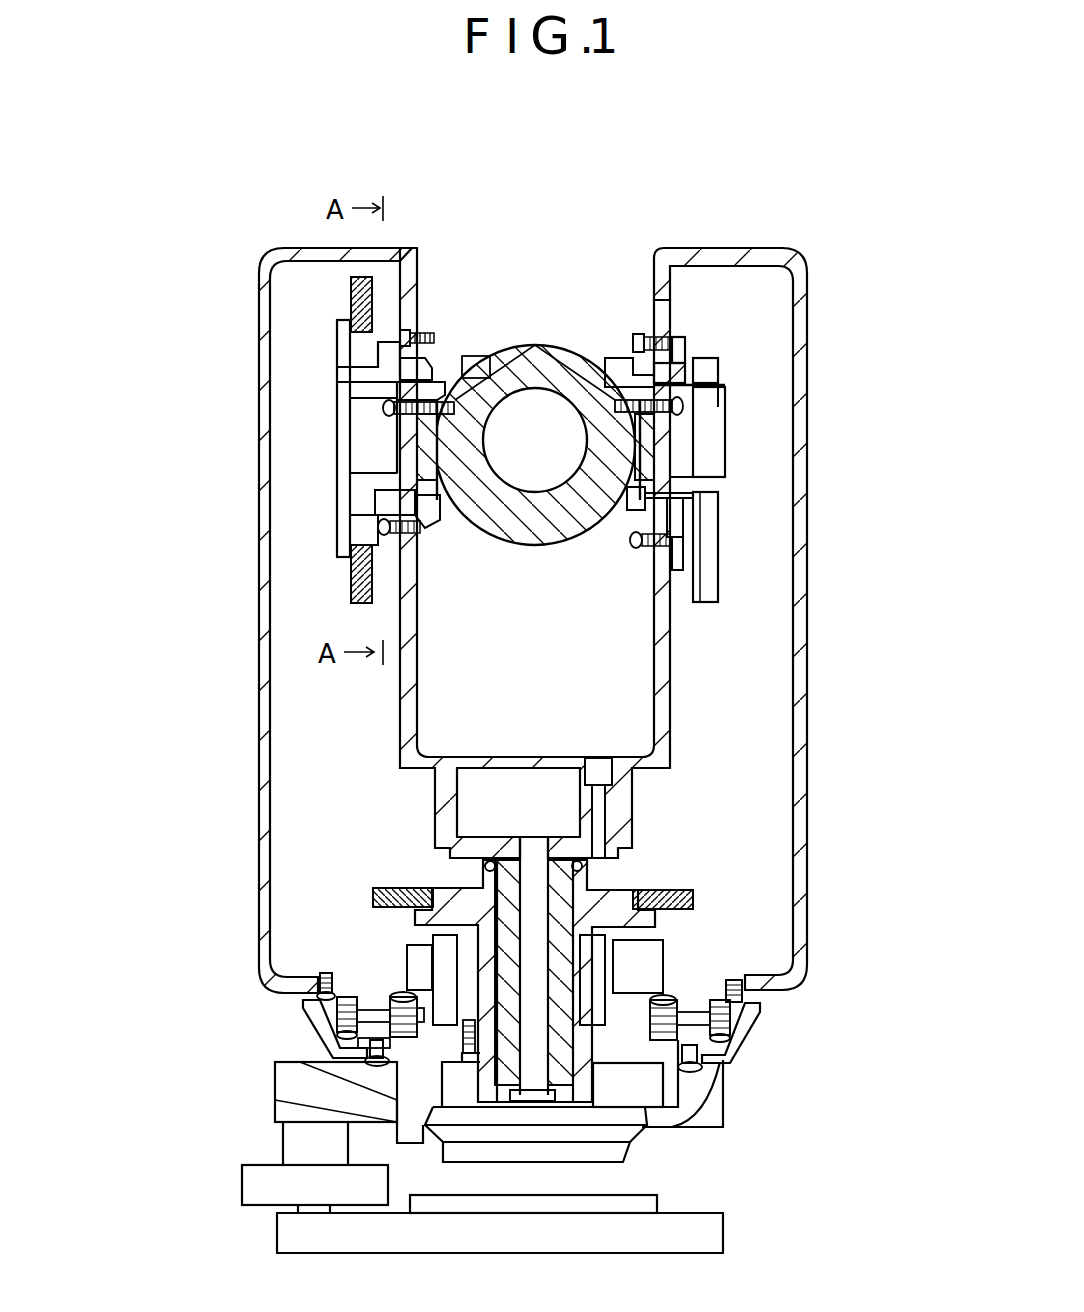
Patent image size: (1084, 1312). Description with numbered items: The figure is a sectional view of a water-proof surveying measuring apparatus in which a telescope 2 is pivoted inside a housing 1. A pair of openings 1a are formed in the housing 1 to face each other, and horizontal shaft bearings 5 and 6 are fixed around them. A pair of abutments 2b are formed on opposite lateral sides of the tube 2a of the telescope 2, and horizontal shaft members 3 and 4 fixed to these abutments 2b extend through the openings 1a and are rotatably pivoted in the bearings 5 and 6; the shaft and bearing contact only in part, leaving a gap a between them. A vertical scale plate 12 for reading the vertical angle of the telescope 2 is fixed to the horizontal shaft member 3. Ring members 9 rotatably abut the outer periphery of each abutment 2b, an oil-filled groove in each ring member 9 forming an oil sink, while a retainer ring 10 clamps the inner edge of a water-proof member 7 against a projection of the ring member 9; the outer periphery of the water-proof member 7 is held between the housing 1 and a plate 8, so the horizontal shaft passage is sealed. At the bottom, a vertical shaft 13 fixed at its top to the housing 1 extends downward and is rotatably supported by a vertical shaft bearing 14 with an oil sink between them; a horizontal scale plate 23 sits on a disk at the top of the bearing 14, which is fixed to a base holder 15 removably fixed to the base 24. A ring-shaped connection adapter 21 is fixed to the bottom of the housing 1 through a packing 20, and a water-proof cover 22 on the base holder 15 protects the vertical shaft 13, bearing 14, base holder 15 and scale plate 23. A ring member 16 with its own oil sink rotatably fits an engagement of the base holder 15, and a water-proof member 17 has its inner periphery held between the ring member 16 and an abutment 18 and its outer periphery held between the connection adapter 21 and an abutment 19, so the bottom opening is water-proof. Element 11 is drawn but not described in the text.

The housing 1 is at (667, 665).
The openings 1a is at (700, 510).
The telescope 2 is at (540, 500).
The tube 2a is at (565, 365).
The abutments 2b is at (482, 362).
The horizontal shaft member 3 is at (343, 375).
The gap a is at (340, 420).
The horizontal shaft member 4 is at (702, 420).
The horizontal shaft bearing 5 is at (385, 342).
The horizontal shaft bearing 6 is at (680, 350).
The water-proof member 7 is at (422, 375).
The plate 8 is at (423, 335).
The ring members 9 is at (440, 385).
The retainer ring 10 is at (425, 530).
The lower clamp 11 is at (458, 500).
The vertical scale plate 12 is at (358, 590).
The vertical shaft 13 is at (587, 880).
The vertical shaft bearing 14 is at (648, 930).
The base holder 15 is at (395, 1098).
The ring member 16 is at (372, 1055).
The water-proof member 17 is at (698, 1027).
The abutment 18 is at (410, 985).
The abutment 19 is at (730, 1030).
The packing 20 is at (730, 1000).
The connection adapter 21 is at (760, 1005).
The water-proof cover 22 is at (313, 1025).
The horizontal scale plate 23 is at (693, 898).
The base 24 is at (285, 1120).